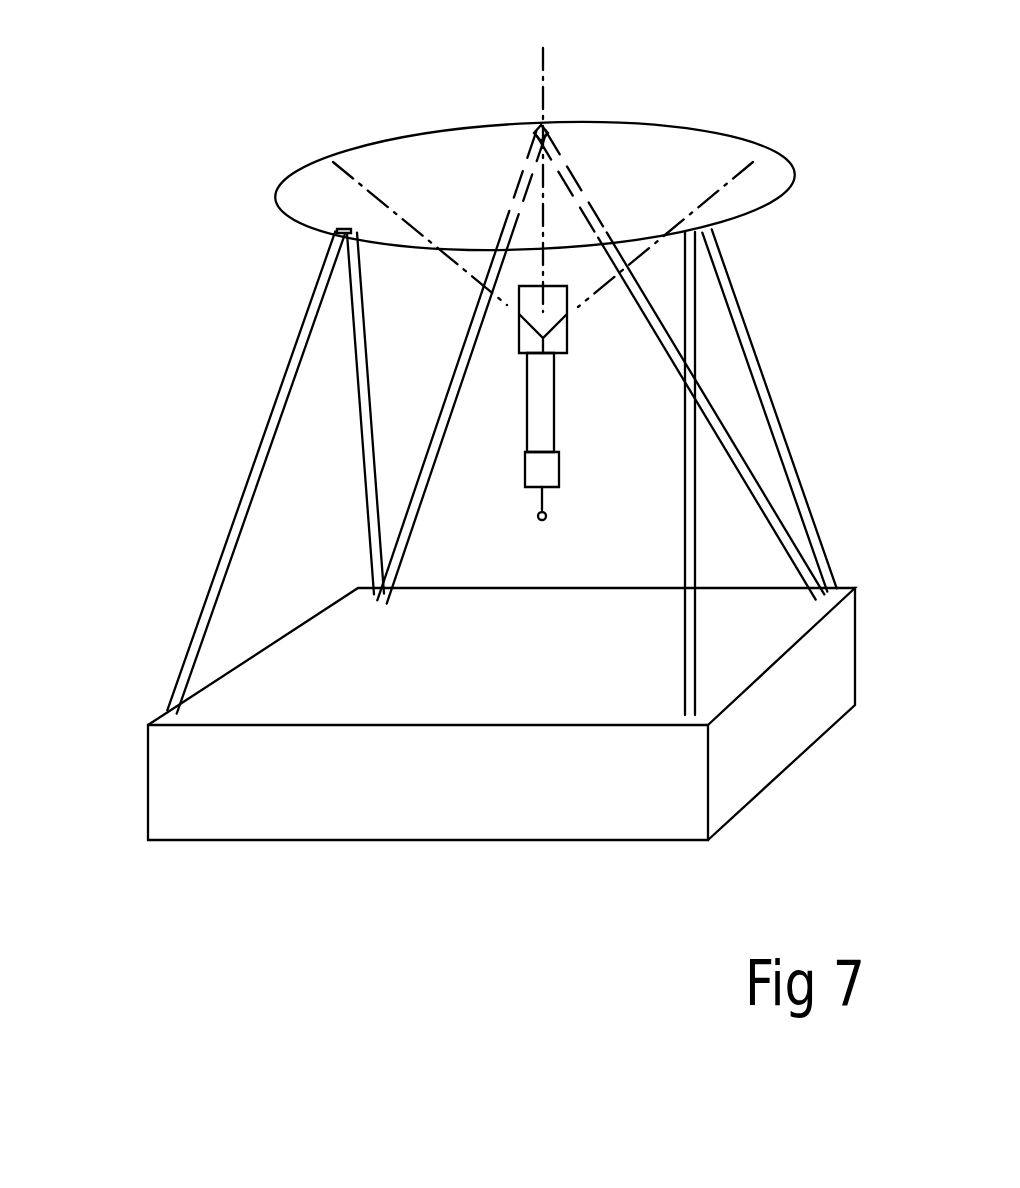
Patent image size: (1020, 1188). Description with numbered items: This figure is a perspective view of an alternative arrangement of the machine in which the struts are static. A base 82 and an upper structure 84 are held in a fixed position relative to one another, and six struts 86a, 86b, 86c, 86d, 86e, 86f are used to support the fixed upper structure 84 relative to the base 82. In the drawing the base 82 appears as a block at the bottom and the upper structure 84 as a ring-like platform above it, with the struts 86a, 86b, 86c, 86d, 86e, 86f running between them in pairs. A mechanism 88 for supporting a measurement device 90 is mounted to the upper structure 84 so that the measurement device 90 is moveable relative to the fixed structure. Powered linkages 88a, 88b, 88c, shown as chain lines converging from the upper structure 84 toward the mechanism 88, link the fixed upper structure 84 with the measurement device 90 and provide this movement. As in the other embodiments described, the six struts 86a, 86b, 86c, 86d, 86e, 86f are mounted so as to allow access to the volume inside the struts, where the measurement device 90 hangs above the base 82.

The base 82 is at (197, 792).
The upper structure 84 is at (305, 201).
The strut 86a is at (245, 502).
The strut 86b is at (367, 492).
The strut 86c is at (462, 335).
The strut 86d is at (673, 364).
The strut 86e is at (770, 408).
The strut 86f is at (692, 548).
The mechanism 88 is at (522, 353).
The powered linkage 88a is at (382, 200).
The powered linkage 88b is at (547, 97).
The powered linkage 88c is at (722, 195).
The measurement device 90 is at (540, 474).